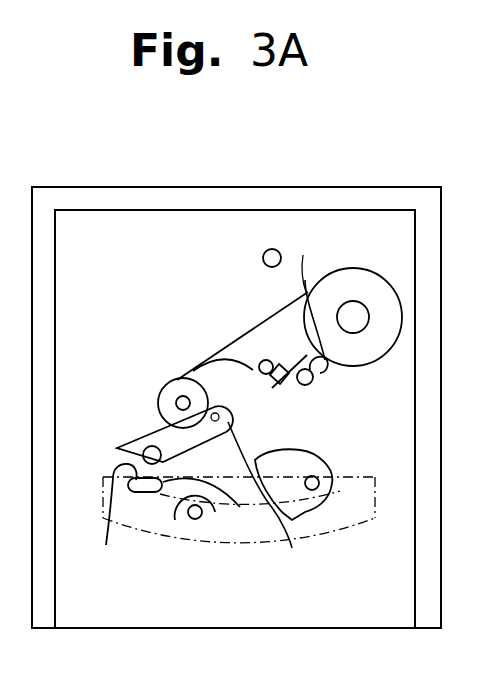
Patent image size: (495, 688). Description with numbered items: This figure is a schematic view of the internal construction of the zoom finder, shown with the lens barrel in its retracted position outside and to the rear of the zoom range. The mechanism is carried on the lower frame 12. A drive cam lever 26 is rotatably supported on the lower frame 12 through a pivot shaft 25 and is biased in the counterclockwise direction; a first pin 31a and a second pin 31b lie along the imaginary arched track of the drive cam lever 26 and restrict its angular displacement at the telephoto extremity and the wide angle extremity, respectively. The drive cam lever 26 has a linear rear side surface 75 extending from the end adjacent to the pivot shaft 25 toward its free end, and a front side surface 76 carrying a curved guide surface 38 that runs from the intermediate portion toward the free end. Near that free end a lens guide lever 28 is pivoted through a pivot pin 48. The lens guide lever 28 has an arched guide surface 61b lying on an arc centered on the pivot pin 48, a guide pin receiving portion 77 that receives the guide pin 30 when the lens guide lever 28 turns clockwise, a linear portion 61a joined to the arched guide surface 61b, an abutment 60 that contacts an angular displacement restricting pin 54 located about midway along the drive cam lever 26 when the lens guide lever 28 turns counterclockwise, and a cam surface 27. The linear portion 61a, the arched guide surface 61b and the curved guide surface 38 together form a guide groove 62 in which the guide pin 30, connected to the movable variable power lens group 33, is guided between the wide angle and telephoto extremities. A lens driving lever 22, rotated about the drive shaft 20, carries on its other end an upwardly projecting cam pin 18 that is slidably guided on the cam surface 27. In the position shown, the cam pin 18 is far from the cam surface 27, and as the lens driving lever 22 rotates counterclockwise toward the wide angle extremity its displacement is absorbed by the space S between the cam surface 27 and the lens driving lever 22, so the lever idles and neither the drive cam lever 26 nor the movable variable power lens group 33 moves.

The lower frame 12 is at (432, 416).
The cam pin 18 is at (320, 485).
The drive shaft 20 is at (180, 528).
The lens driving lever 22 is at (195, 520).
The pivot shaft 25 is at (360, 308).
The drive cam lever 26 is at (322, 288).
The cam surface 27 is at (322, 460).
The lens guide lever 28 is at (233, 380).
The guide pin 30 is at (147, 447).
The first pin 31a is at (272, 249).
The second pin 31b is at (315, 378).
The movable variable power lens group 33 is at (315, 522).
The curved guide surface 38 is at (160, 390).
The pivot pin 48 is at (182, 396).
The angular displacement restricting pin 54 is at (273, 386).
The abutment 60 is at (300, 393).
The linear portion 61a is at (106, 545).
The arched guide surface 61b is at (218, 522).
The guide groove 62 is at (262, 468).
The linear rear side surface 75 is at (268, 315).
The front side surface 76 is at (303, 255).
The guide pin receiving portion 77 is at (213, 405).
The space S is at (292, 548).